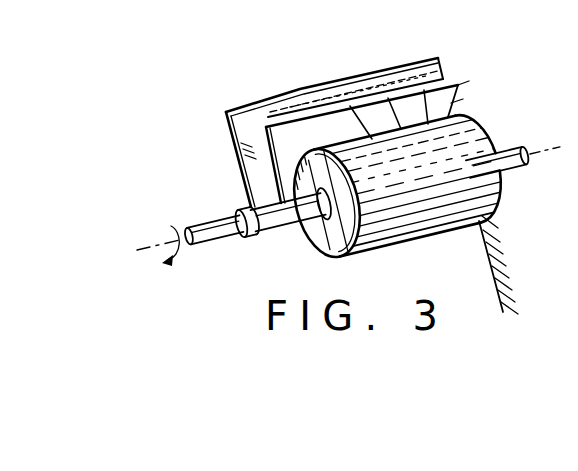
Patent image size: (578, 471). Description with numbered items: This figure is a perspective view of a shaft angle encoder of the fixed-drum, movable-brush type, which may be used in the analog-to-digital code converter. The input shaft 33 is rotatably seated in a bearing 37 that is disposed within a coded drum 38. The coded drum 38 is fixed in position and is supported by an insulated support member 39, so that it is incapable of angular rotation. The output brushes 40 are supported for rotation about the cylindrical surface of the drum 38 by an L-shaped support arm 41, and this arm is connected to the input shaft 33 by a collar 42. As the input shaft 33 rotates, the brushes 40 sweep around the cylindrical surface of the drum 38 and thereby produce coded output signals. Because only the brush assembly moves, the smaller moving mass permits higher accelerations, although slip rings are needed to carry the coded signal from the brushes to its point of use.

The input shaft 33 is at (211, 225).
The bearing 37 is at (315, 232).
The coded drum 38 is at (500, 188).
The insulated support member 39 is at (492, 256).
The output brushes 40 is at (409, 96).
The L-shaped support arm 41 is at (268, 113).
The collar 42 is at (261, 238).